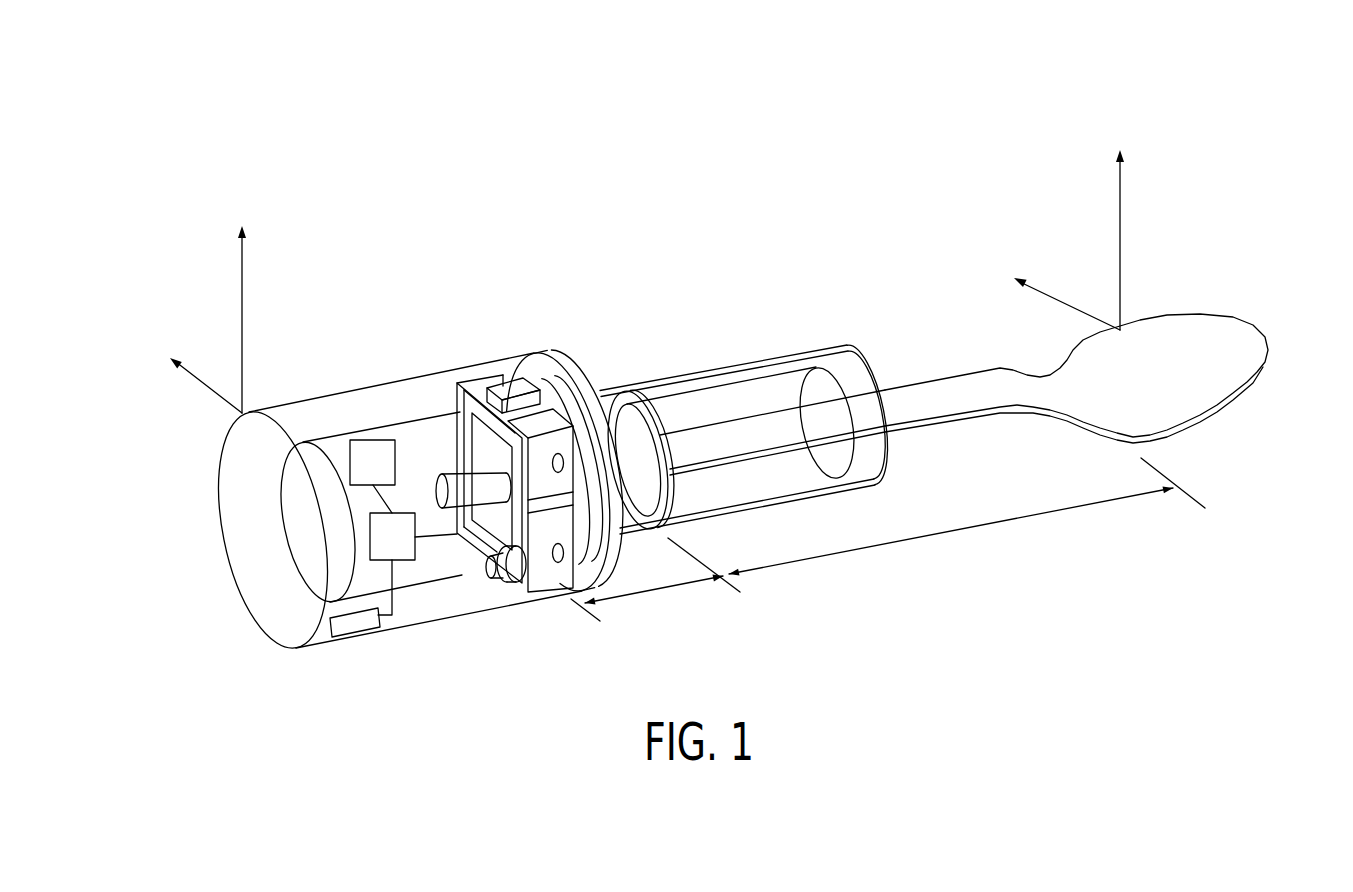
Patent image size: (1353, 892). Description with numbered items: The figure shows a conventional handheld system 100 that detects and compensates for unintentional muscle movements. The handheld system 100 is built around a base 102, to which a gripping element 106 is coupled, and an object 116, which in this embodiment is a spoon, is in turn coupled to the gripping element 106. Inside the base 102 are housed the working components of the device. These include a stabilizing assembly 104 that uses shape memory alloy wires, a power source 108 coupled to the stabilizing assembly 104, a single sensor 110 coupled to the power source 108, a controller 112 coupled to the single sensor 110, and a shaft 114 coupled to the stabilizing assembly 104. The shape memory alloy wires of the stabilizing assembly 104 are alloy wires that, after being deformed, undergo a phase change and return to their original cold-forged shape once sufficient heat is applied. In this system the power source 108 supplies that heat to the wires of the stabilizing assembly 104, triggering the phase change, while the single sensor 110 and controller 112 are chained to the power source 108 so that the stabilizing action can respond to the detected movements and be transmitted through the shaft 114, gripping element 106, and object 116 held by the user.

The handheld system 100 is at (172, 166).
The base 102 is at (162, 498).
The stabilizing assembly 104 is at (517, 580).
The gripping element 106 is at (852, 380).
The power source 108 is at (373, 440).
The single sensor 110 is at (360, 630).
The controller 112 is at (415, 547).
The shaft 114 is at (447, 470).
The object 116 is at (1243, 373).